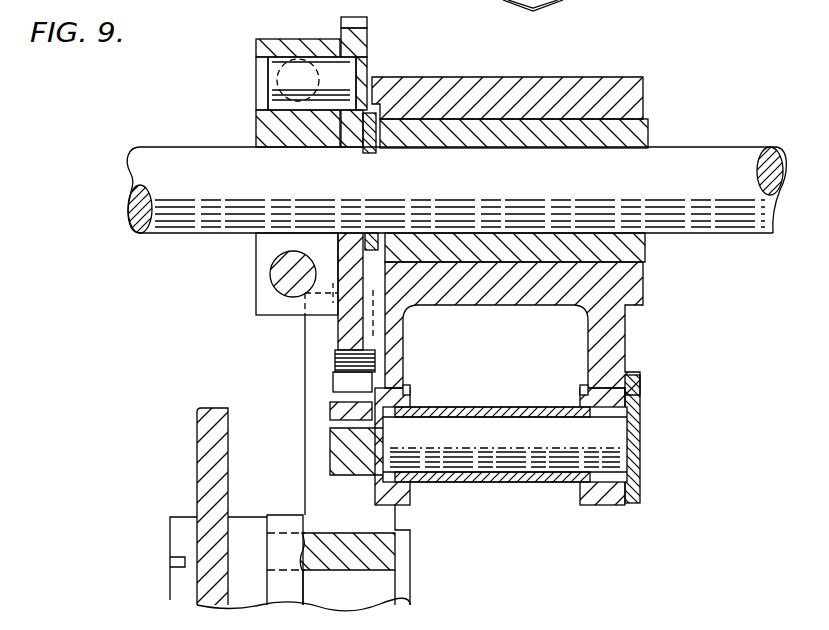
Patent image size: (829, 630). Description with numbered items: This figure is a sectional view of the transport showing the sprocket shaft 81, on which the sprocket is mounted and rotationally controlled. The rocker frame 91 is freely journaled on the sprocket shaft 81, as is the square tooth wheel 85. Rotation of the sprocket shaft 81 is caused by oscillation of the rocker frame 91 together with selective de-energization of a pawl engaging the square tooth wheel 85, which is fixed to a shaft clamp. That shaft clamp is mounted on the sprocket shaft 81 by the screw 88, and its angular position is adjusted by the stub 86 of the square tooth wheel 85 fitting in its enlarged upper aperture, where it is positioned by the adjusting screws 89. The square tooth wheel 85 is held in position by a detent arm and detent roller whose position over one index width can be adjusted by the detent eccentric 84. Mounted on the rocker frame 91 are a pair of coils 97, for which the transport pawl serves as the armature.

The sprocket shaft 81 is at (704, 163).
The detent eccentric 84 is at (245, 528).
The square tooth wheel 85 is at (358, 22).
The stub 86 is at (326, 70).
The screw 88 is at (283, 273).
The adjusting screws 89 is at (262, 80).
The rocker frame 91 is at (628, 330).
The coils 97 is at (509, 483).